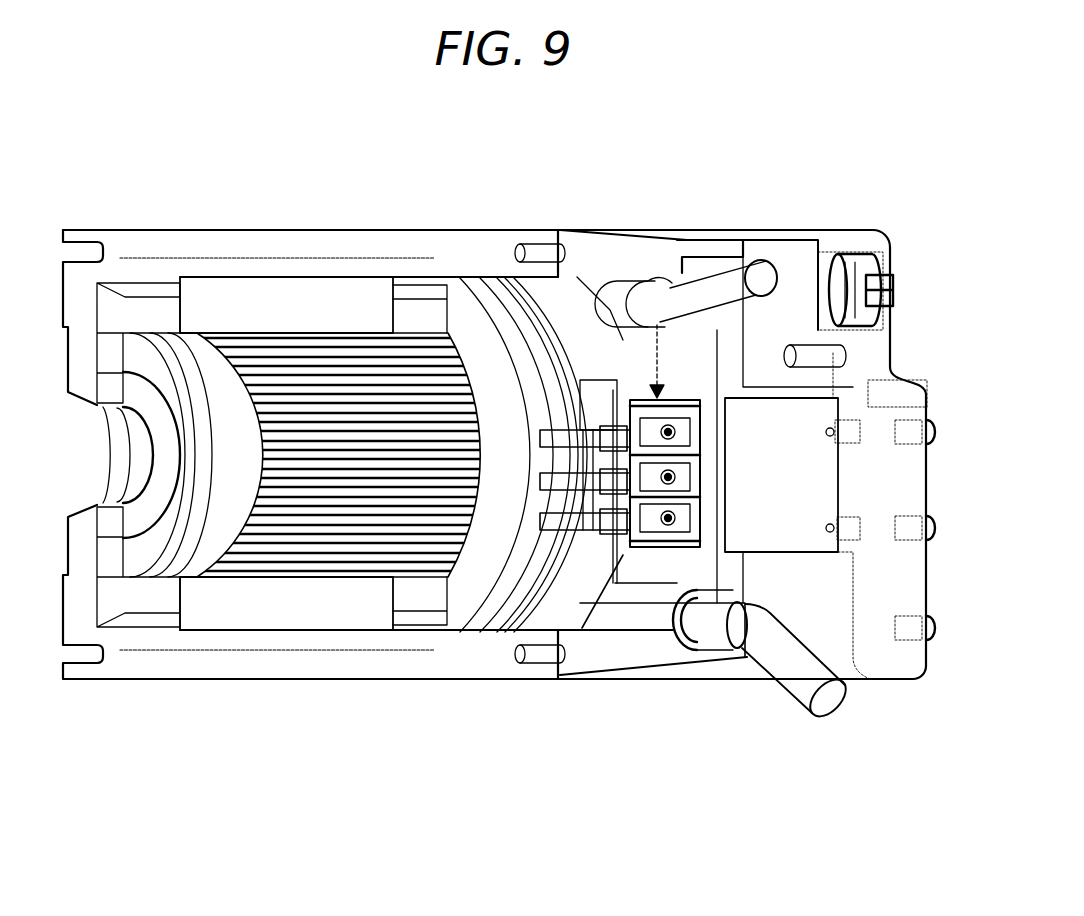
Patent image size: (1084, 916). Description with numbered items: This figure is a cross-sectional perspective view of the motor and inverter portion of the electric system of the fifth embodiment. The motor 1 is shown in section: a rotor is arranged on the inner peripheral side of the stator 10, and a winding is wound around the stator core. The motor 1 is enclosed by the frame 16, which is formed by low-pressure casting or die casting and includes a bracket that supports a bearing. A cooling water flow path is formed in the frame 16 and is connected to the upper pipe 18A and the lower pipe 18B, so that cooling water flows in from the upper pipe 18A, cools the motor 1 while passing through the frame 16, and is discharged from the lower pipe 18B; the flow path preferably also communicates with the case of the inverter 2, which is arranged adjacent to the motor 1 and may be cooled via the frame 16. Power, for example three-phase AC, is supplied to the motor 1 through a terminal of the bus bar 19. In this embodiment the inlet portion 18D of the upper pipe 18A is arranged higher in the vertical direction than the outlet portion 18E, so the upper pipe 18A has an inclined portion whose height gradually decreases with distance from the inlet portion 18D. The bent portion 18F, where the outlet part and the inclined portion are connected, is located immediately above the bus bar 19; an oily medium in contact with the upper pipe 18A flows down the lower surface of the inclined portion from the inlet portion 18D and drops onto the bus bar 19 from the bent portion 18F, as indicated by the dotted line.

The motor 1 is at (125, 231).
The inverter 2 is at (840, 228).
The stator 10 is at (200, 305).
The frame 16 is at (262, 238).
The upper pipe 18A is at (680, 290).
The lower pipe 18B is at (823, 720).
The inlet portion 18D is at (760, 262).
The outlet portion 18E is at (613, 290).
The bent portion 18F is at (662, 283).
The bus bar 19 is at (698, 400).